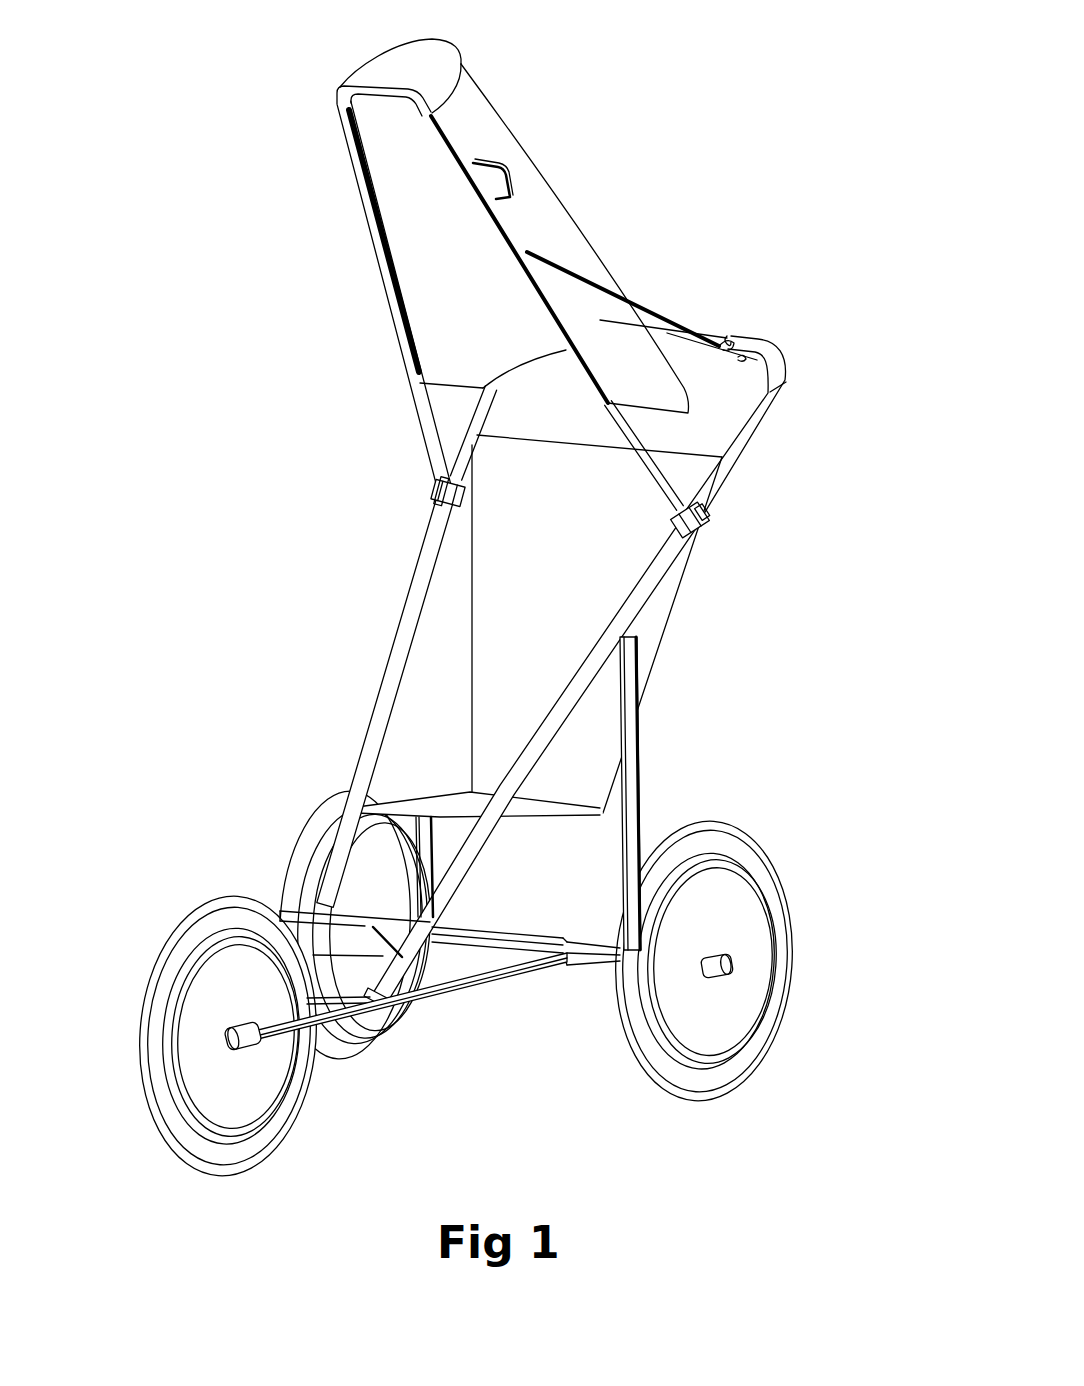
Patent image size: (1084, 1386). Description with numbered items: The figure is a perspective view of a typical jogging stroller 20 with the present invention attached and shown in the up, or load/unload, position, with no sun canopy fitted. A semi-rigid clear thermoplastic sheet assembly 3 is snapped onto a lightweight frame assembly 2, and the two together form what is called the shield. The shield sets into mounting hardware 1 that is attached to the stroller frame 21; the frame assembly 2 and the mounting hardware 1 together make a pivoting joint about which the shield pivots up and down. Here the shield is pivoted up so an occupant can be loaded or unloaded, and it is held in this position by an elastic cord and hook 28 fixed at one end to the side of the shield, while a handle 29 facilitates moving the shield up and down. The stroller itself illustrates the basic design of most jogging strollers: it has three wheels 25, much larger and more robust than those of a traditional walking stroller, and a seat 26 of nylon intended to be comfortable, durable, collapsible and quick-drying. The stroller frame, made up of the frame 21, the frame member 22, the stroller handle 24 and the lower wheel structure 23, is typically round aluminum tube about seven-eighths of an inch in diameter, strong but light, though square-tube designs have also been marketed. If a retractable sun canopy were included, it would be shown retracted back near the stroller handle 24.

The mounting hardware 1 is at (432, 502).
The frame assembly 2 is at (423, 425).
The sheet assembly 3 is at (579, 227).
The jogging stroller 20 is at (258, 678).
The stroller frame 21 is at (412, 593).
The stroller frame member 22 is at (640, 785).
The lower wheel structure 23 is at (485, 983).
The stroller handle 24 is at (770, 345).
The wheels 25 is at (186, 917).
The seat 26 is at (657, 663).
The elastic cord and hook 28 is at (663, 307).
The handle 29 is at (503, 176).